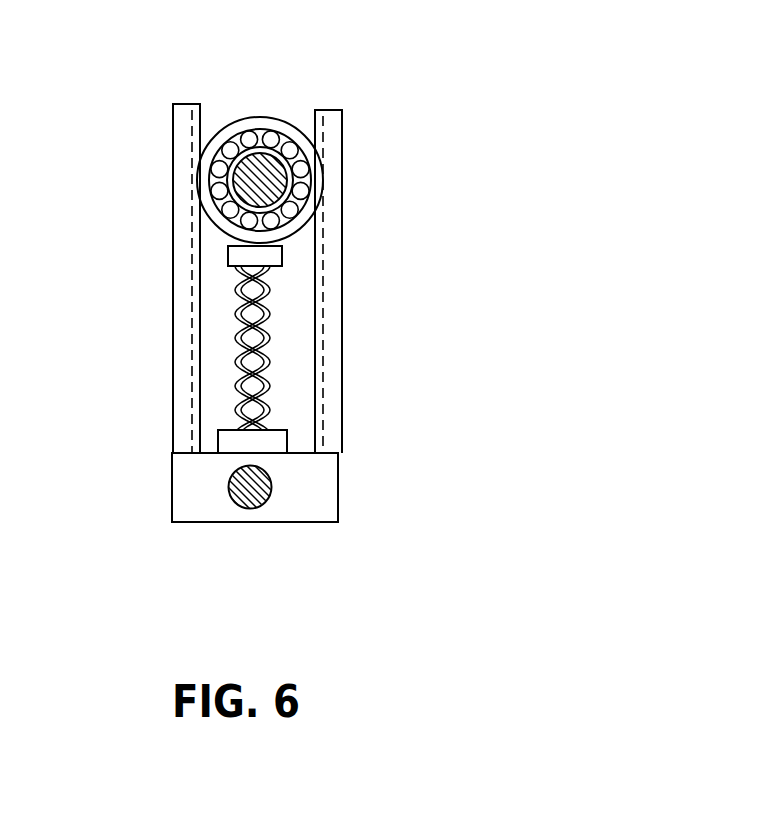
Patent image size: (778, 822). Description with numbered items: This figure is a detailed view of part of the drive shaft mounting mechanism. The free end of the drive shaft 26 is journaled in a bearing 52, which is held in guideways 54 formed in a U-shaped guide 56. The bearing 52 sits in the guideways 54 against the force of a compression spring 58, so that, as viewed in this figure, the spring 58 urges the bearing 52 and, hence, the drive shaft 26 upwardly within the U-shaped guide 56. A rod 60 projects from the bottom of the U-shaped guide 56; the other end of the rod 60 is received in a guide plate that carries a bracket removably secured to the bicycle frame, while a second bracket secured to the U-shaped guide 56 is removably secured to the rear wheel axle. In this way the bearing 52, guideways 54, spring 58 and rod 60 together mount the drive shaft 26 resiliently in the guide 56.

The drive shaft 26 is at (268, 180).
The bearing 52 is at (258, 130).
The guideways 54 is at (195, 292).
The U-shaped guide 56 is at (150, 368).
The compression spring 58 is at (268, 338).
The rod 60 is at (250, 498).